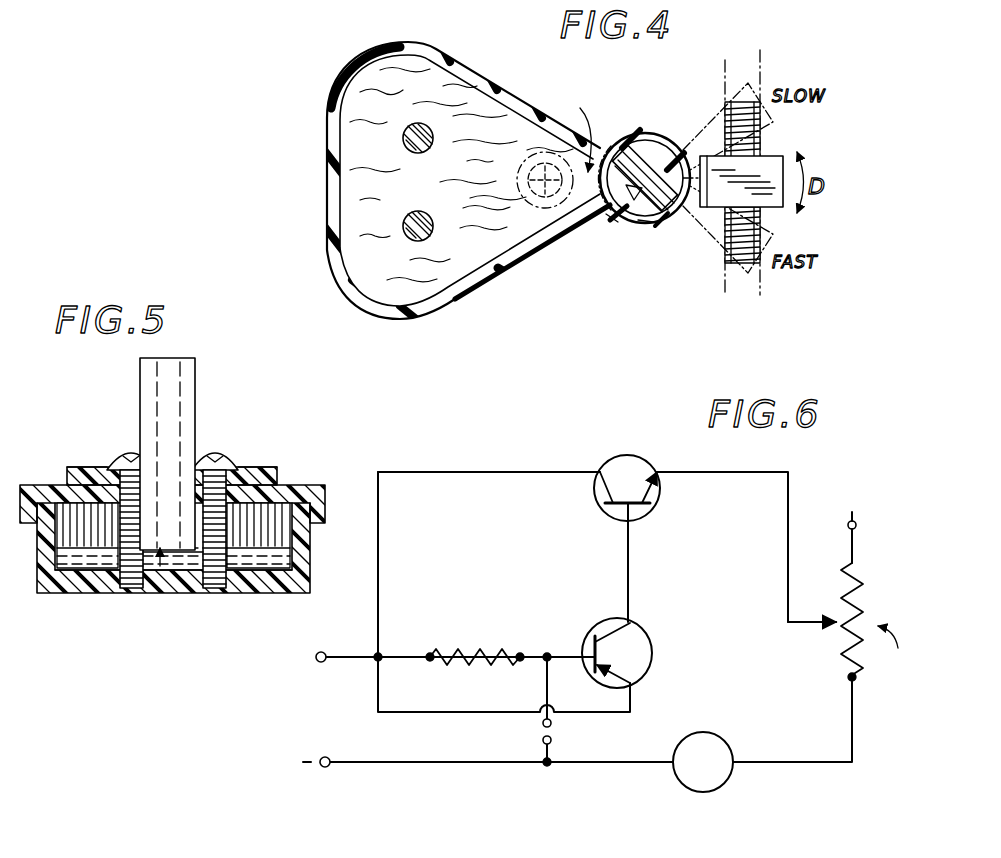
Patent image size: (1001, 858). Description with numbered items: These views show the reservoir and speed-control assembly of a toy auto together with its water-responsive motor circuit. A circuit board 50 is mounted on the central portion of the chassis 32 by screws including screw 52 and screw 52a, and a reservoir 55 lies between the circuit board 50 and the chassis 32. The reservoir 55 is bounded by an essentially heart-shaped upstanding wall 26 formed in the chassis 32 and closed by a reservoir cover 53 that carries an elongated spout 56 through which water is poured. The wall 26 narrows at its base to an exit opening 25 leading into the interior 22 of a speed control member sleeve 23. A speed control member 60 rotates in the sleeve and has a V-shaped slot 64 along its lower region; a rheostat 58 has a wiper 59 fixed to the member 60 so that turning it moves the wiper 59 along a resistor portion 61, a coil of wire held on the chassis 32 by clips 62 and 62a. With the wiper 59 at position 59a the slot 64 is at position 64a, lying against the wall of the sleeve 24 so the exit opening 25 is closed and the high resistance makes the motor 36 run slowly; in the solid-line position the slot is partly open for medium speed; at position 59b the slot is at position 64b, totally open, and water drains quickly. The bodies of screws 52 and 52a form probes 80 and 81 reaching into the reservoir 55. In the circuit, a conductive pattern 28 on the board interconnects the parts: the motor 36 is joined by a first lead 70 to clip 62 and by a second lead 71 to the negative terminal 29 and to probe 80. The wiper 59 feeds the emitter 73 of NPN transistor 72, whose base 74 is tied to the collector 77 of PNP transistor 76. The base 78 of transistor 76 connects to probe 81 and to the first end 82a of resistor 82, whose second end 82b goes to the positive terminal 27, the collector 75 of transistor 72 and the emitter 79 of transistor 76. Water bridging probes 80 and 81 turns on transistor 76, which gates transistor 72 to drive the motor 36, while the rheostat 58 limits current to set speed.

In FIG. 4, the sleeve interior 22 is at (612, 218).
In FIG. 4, the speed control member sleeve 23 is at (662, 142).
In FIG. 4, the sleeve wall 24 is at (649, 224).
In FIG. 4, the exit opening 25 is at (573, 129).
In FIG. 5, the exit opening 25 is at (160, 568).
In FIG. 4, the upstanding wall 26 is at (325, 208).
In FIG. 5, the upstanding wall 26 is at (300, 560).
In FIG. 6, the terminal 27 is at (324, 652).
In FIG. 5, the conductive pattern 28 is at (88, 470).
In FIG. 6, the terminal 29 is at (327, 768).
In FIG. 5, the chassis 32 is at (297, 593).
In FIG. 6, the motor 36 is at (709, 791).
In FIG. 5, the circuit board 50 is at (280, 476).
In FIG. 5, the screw 52 is at (229, 467).
In FIG. 5, the screw 52a is at (128, 452).
In FIG. 5, the reservoir cover 53 is at (35, 488).
In FIG. 4, the reservoir 55 is at (356, 261).
In FIG. 5, the reservoir 55 is at (72, 561).
In FIG. 4, the spout 56 is at (550, 206).
In FIG. 5, the spout 56 is at (193, 376).
In FIG. 4, the rheostat 58 is at (697, 260).
In FIG. 6, the rheostat 58 is at (895, 649).
In FIG. 4, the wiper 59 is at (765, 157).
In FIG. 6, the wiper 59 is at (808, 625).
In FIG. 4, the wiper position 59a is at (706, 100).
In FIG. 4, the wiper position 59b is at (742, 288).
In FIG. 4, the speed control member 60 is at (643, 135).
In FIG. 4, the resistor portion 61 is at (781, 208).
In FIG. 6, the resistor portion 61 is at (862, 572).
In FIG. 6, the clip 62 is at (856, 681).
In FIG. 6, the clip 62a is at (869, 521).
In FIG. 4, the V-shaped slot 64 is at (606, 190).
In FIG. 5, the V-shaped slot 64 is at (182, 545).
In FIG. 4, the V-shaped slot position 64a is at (651, 222).
In FIG. 4, the V-shaped slot position 64b is at (609, 143).
In FIG. 6, the first lead 70 is at (772, 765).
In FIG. 6, the second lead 71 is at (650, 766).
In FIG. 6, the NPN transistor 72 is at (653, 510).
In FIG. 6, the emitter 73 is at (662, 497).
In FIG. 6, the base 74 is at (630, 515).
In FIG. 6, the collector 75 is at (601, 473).
In FIG. 6, the PNP transistor 76 is at (654, 660).
In FIG. 6, the collector 77 is at (631, 631).
In FIG. 6, the base 78 is at (590, 648).
In FIG. 6, the emitter 79 is at (641, 684).
In FIG. 4, the probe 80 is at (430, 232).
In FIG. 5, the probe 80 is at (221, 523).
In FIG. 6, the probe 80 is at (552, 740).
In FIG. 4, the second probe 81 is at (406, 130).
In FIG. 5, the second probe 81 is at (121, 530).
In FIG. 6, the second probe 81 is at (552, 723).
In FIG. 6, the resistor 82 is at (449, 662).
In FIG. 6, the first end of resistor 82a is at (530, 650).
In FIG. 6, the second end of resistor 82b is at (420, 641).